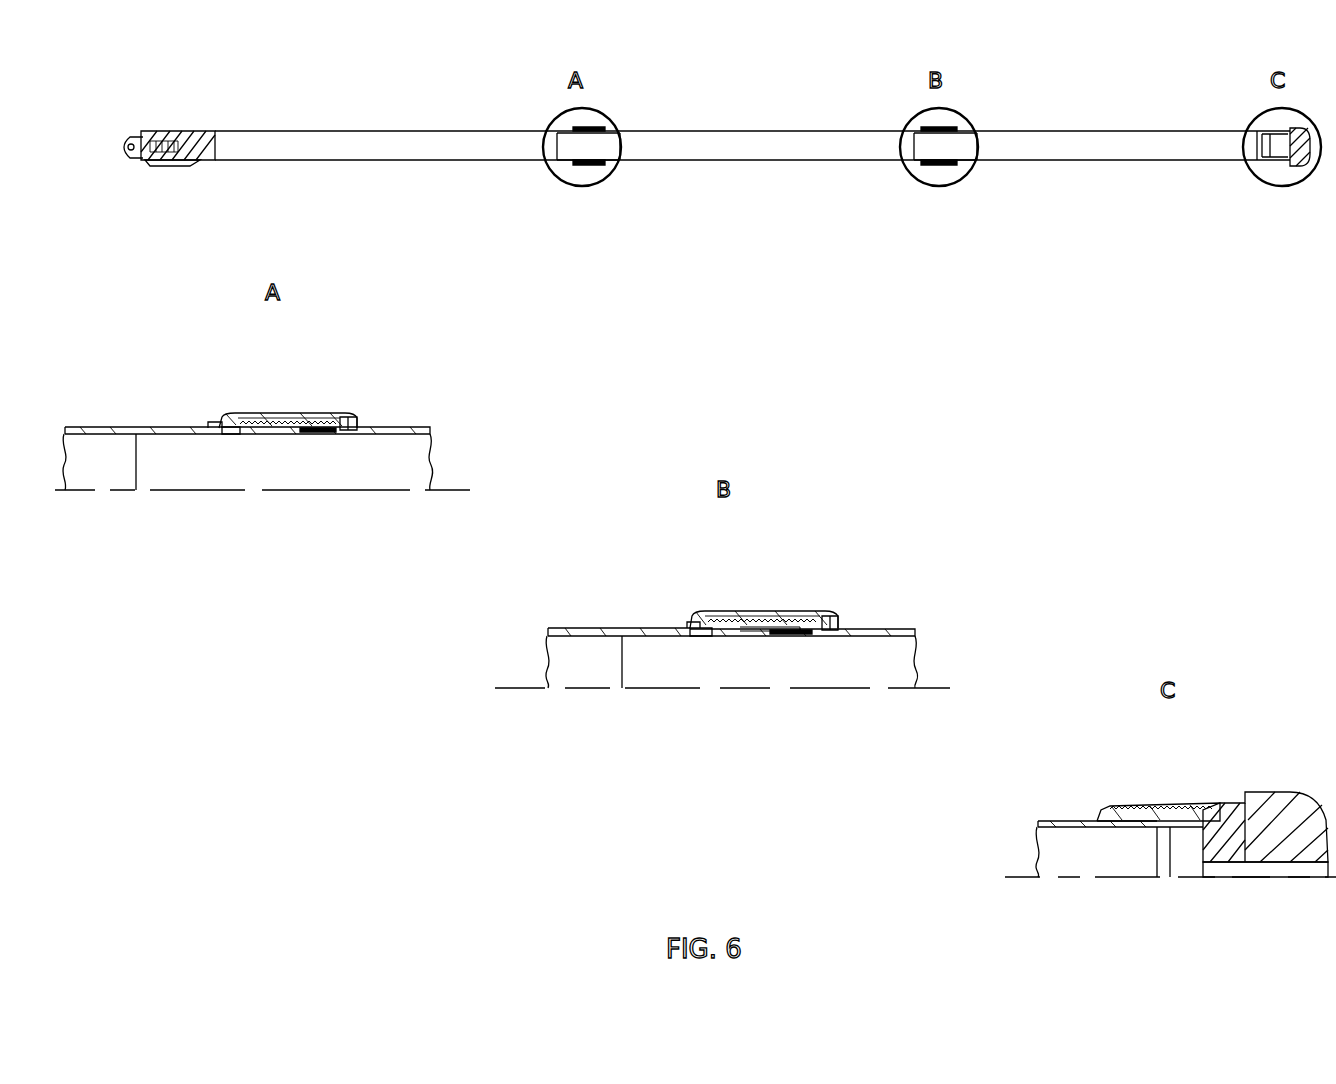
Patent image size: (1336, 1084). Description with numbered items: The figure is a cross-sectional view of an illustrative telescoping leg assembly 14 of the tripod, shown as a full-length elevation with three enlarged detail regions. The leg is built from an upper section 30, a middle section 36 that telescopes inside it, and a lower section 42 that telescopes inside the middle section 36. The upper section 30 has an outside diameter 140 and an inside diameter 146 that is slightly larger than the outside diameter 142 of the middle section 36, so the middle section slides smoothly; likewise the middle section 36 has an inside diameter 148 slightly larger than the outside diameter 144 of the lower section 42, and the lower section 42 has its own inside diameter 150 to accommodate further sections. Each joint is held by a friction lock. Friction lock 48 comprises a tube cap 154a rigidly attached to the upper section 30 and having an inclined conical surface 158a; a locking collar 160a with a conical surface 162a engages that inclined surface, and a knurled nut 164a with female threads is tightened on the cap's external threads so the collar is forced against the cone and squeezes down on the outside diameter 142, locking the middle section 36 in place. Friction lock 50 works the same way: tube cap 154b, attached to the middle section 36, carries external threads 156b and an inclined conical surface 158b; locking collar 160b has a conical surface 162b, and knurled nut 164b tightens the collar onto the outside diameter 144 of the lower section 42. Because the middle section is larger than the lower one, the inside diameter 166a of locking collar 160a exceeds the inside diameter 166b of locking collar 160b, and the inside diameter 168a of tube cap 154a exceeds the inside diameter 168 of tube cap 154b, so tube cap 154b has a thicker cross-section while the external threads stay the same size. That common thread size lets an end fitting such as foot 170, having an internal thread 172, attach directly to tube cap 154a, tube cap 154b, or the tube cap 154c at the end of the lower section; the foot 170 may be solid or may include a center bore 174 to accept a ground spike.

The leg assembly 14 is at (287, 118).
The upper section 30 is at (313, 162).
The middle section 36 is at (738, 162).
The lower section 42 is at (1080, 162).
The friction lock 48 is at (622, 113).
The friction lock 50 is at (985, 112).
The outside diameter 140 is at (472, 67).
The outside diameter 142 is at (785, 67).
The outside diameter 144 is at (1188, 67).
The inside diameter 146 is at (102, 436).
The inside diameter 148 is at (585, 638).
The inside diameter 150 is at (1088, 829).
The tube cap 154a is at (213, 425).
The tube cap 154b is at (682, 622).
The tube cap 154c is at (1097, 812).
The external threads 156b is at (740, 618).
The inclined conical surface 158a is at (257, 420).
The inclined conical surface 158b is at (775, 629).
The locking collar 160a is at (358, 424).
The locking collar 160b is at (840, 622).
The conical surface 162a is at (330, 430).
The conical surface 162b is at (795, 636).
The knurled nut 164a is at (290, 415).
The knurled nut 164b is at (775, 613).
The inside diameter 166a is at (408, 436).
The inside diameter 166b is at (855, 638).
The inside diameter 168 is at (700, 628).
The inside diameter 168a is at (230, 436).
The foot 170 is at (1272, 792).
The internal thread 172 is at (1172, 805).
The center bore 174 is at (1283, 870).